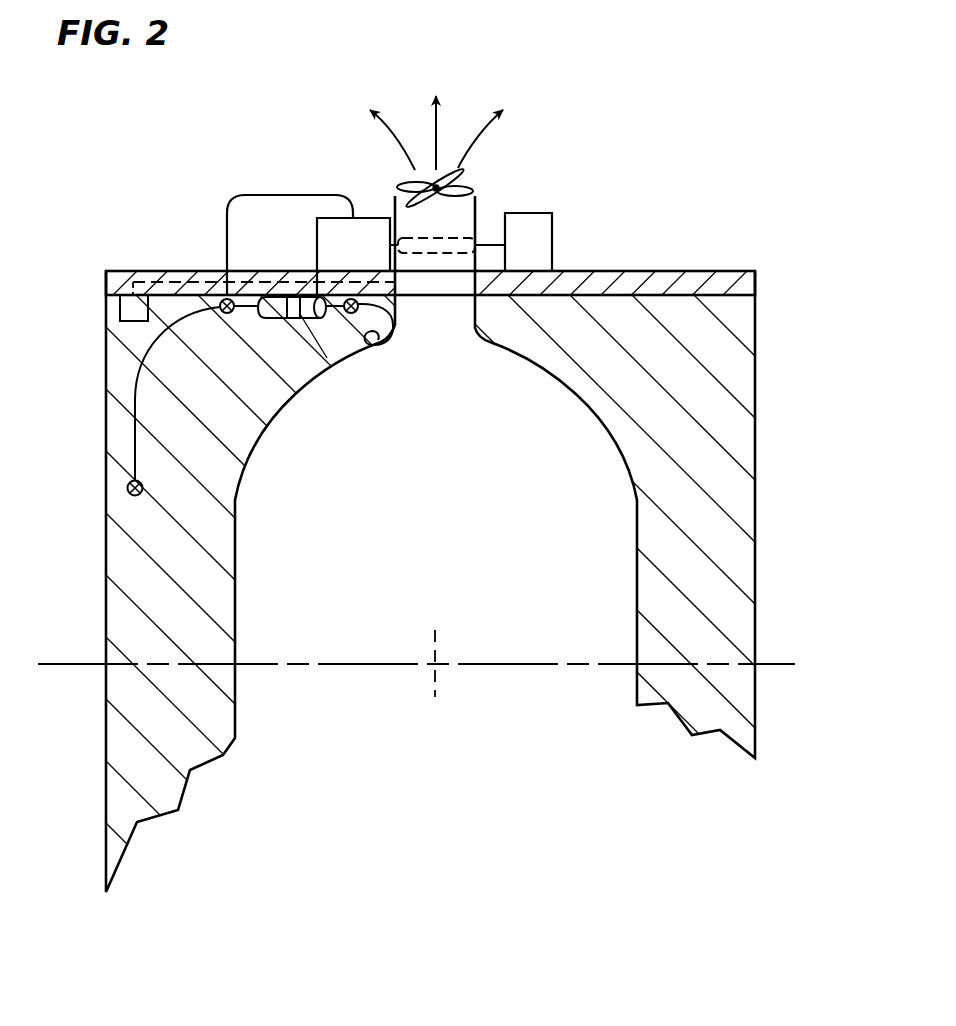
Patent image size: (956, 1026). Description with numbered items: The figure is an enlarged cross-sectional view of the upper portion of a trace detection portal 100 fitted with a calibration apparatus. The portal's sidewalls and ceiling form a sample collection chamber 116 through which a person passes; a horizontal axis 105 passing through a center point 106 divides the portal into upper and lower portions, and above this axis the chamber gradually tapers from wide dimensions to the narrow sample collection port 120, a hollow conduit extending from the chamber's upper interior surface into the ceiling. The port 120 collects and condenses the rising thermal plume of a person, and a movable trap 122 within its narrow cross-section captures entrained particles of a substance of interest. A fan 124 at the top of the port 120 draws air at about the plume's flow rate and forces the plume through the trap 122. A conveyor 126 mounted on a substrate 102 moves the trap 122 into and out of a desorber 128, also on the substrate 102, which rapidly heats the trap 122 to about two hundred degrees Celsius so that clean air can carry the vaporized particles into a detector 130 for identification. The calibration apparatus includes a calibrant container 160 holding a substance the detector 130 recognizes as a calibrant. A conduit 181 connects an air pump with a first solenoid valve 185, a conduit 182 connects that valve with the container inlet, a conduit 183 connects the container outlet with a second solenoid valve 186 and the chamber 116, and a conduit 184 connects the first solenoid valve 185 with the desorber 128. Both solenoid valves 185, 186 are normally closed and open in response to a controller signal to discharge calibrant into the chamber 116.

The trace detection portal 100 is at (84, 212).
The substrate 102 is at (665, 278).
The horizontal axis 105 is at (778, 660).
The center point 106 is at (430, 658).
The sample collection chamber 116 is at (637, 573).
The sample collection port 120 is at (457, 360).
The movable trap 122 is at (440, 237).
The fan 124 is at (459, 184).
The conveyor 126 is at (533, 235).
The desorber 128 is at (378, 262).
The detector 130 is at (127, 308).
The calibrant container 160 is at (270, 319).
The conduit 181 is at (135, 385).
The conduit 182 is at (245, 308).
The conduit 183 is at (350, 314).
The conduit 184 is at (268, 196).
The first solenoid valve 185 is at (230, 314).
The second solenoid valve 186 is at (397, 313).